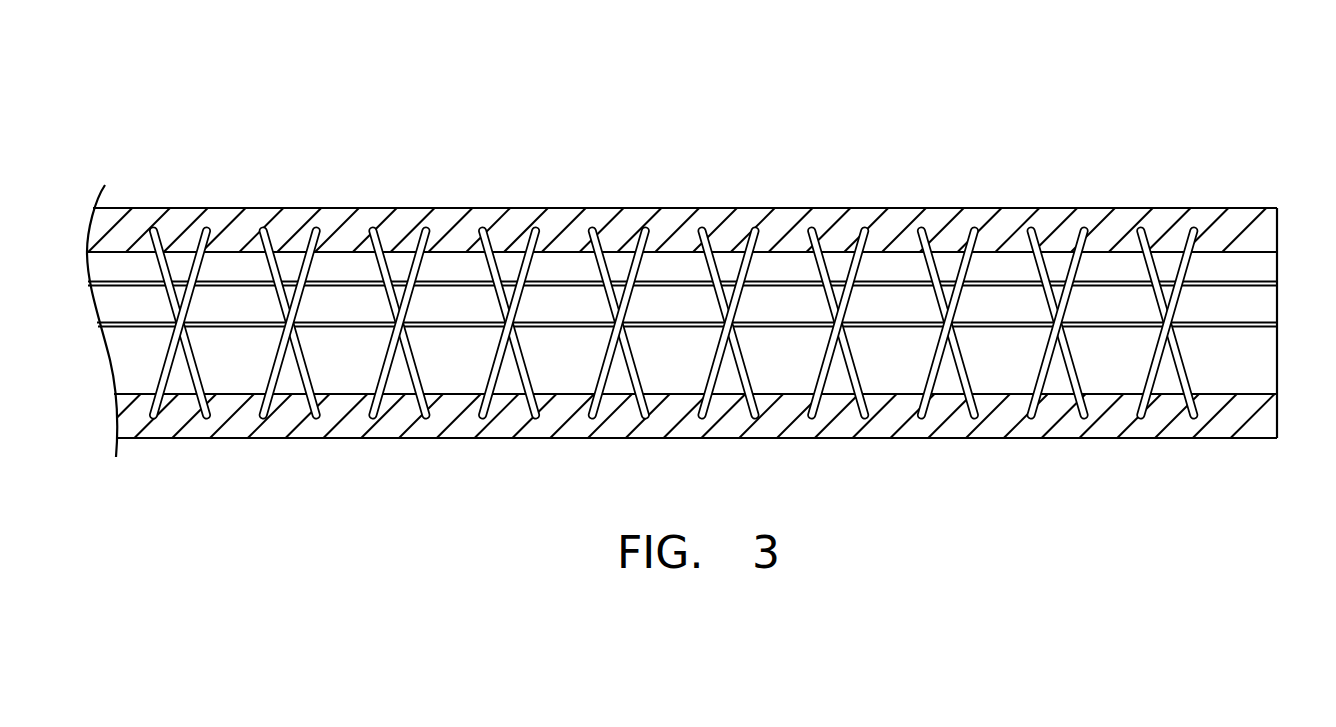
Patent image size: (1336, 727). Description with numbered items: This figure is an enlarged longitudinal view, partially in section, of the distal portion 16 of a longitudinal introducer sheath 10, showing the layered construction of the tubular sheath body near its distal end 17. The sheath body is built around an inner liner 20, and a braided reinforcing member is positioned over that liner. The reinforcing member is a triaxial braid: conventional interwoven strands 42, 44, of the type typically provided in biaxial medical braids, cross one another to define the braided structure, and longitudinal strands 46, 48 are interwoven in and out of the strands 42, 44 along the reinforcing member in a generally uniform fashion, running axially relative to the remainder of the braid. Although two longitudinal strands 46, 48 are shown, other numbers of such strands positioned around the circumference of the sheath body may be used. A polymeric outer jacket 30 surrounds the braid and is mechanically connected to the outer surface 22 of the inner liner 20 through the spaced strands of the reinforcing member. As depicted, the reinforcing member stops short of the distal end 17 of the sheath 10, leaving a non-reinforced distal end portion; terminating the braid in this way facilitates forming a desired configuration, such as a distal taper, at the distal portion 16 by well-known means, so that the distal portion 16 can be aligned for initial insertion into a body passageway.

The longitudinal sheath 10 is at (774, 156).
The distal portion 16 is at (973, 208).
The distal end 17 is at (1270, 228).
The polymeric outer jacket 30 is at (177, 223).
The strand 42 is at (350, 247).
The strand 44 is at (437, 250).
The longitudinal strand 46 is at (884, 268).
The longitudinal strand 48 is at (895, 330).
The inner liner 20 is at (1119, 362).
The outer surface 22 is at (455, 360).